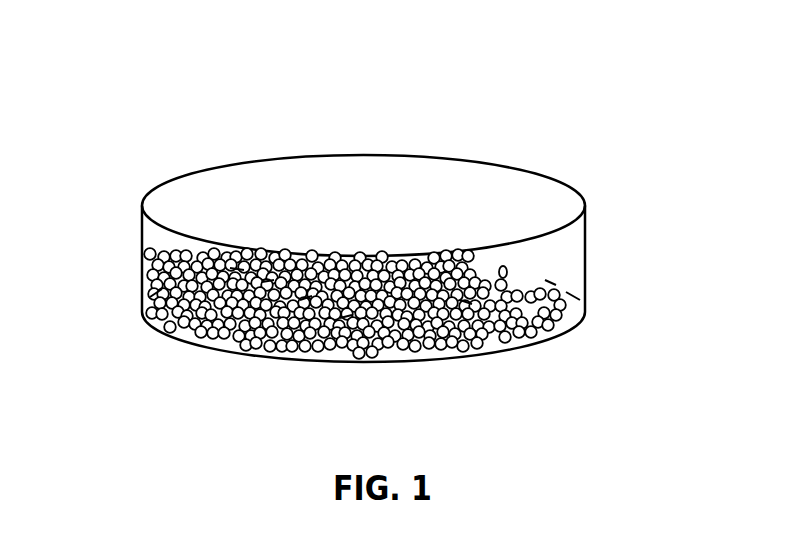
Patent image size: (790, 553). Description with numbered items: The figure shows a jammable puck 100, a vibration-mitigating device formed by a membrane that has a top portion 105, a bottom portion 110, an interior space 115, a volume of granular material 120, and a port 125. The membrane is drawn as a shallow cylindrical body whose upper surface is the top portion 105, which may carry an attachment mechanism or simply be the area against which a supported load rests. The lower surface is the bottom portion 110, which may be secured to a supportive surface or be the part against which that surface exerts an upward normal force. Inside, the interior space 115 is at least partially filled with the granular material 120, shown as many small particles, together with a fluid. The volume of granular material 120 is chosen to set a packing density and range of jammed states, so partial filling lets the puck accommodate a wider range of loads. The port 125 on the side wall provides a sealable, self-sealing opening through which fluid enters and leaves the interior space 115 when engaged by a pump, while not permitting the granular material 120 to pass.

The jammable puck 100 is at (648, 82).
The top portion 105 is at (317, 185).
The bottom portion 110 is at (374, 380).
The interior space 115 is at (576, 242).
The granular material 120 is at (142, 268).
The port 125 is at (512, 271).